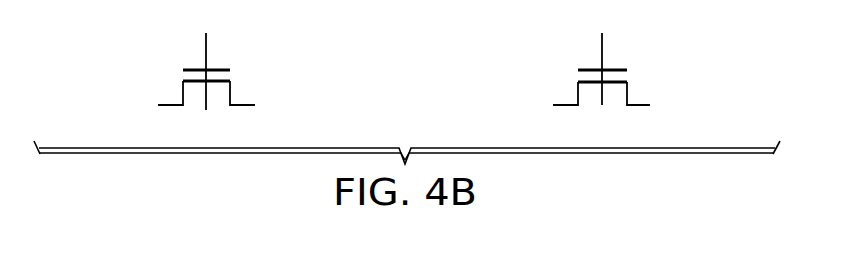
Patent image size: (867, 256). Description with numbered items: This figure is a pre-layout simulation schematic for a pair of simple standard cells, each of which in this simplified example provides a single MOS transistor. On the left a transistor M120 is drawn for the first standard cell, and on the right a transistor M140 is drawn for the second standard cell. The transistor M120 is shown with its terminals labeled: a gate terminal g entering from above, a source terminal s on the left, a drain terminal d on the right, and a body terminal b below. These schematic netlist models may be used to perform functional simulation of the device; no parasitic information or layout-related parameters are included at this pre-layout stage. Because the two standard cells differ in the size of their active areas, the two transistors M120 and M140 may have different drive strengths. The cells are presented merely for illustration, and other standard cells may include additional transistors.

The transistor M120 is at (196, 69).
The transistor M140 is at (583, 69).
The gate terminal g is at (204, 17).
The source terminal s is at (146, 103).
The drain terminal d is at (265, 103).
The body terminal b is at (204, 121).